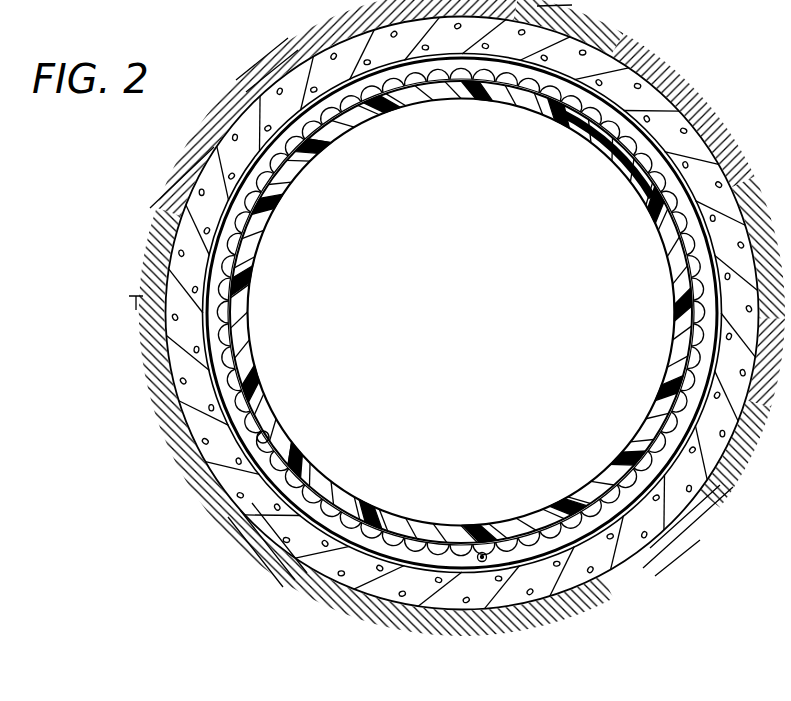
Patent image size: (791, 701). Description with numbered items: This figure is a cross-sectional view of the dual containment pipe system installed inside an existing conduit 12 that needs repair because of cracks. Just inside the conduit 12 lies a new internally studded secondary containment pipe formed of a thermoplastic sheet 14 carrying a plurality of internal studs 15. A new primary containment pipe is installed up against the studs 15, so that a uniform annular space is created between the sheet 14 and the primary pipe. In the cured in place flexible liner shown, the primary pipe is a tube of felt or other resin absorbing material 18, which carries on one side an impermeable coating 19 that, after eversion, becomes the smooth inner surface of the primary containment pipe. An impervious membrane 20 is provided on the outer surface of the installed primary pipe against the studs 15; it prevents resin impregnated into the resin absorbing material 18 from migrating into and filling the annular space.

The existing conduit 12 is at (593, 50).
The thermoplastic sheet 14 is at (610, 100).
The internal studs 15 is at (690, 124).
The resin absorbing material 18 is at (237, 323).
The impermeable coating 19 is at (262, 373).
The impervious membrane 20 is at (260, 434).